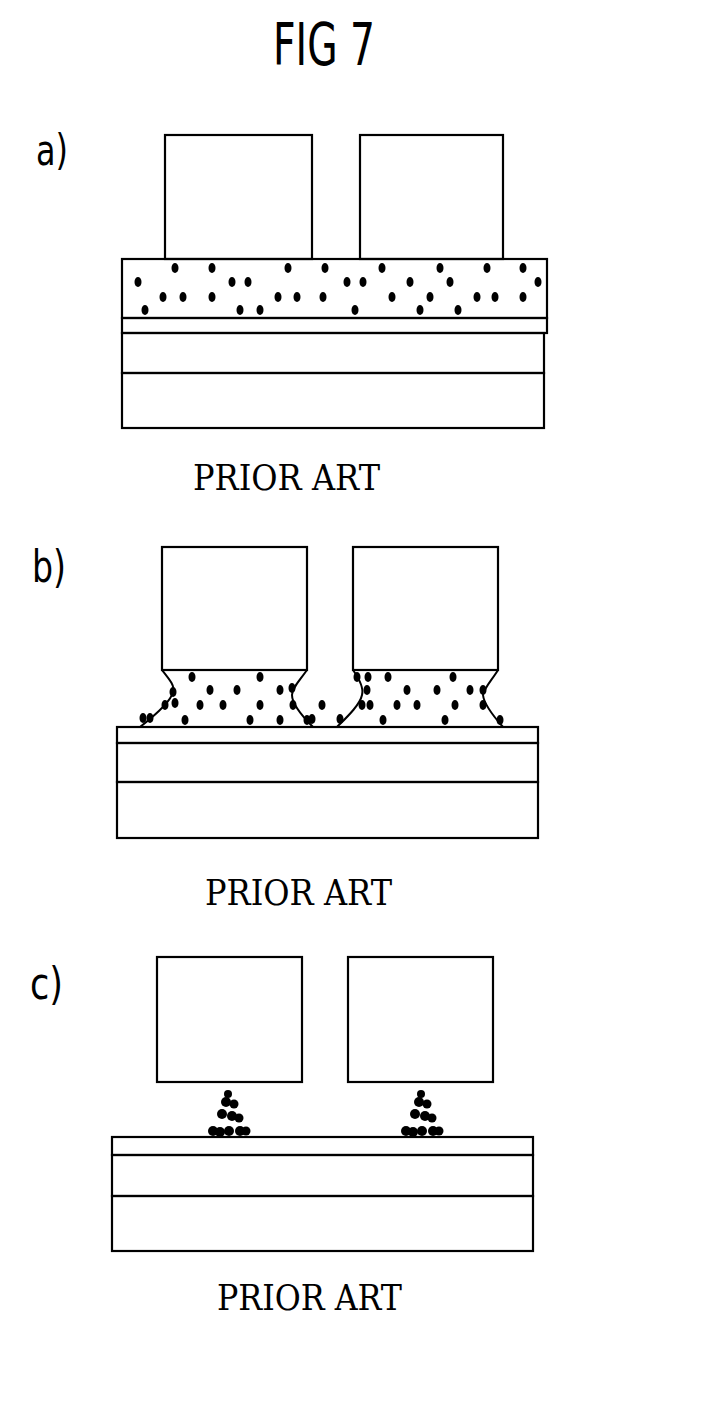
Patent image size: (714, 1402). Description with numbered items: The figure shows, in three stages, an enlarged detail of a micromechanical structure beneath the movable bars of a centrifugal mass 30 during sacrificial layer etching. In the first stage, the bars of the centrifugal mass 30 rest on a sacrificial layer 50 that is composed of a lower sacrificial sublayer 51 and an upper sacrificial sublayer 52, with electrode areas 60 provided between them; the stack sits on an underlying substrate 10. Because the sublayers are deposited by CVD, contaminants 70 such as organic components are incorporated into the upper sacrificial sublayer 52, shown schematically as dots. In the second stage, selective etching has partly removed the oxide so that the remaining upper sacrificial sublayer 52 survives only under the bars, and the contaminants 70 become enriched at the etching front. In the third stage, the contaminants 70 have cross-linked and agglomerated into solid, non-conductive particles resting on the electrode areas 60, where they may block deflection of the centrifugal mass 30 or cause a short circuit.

The substrate 10 is at (532, 405).
The centrifugal mass 30 is at (495, 191).
The sacrificial layer 50 is at (620, 260).
The lower sacrificial sublayer 51 is at (532, 357).
The upper sacrificial sublayer 52 is at (532, 300).
The electrode areas 60 is at (127, 325).
The contaminants 70 is at (143, 268).